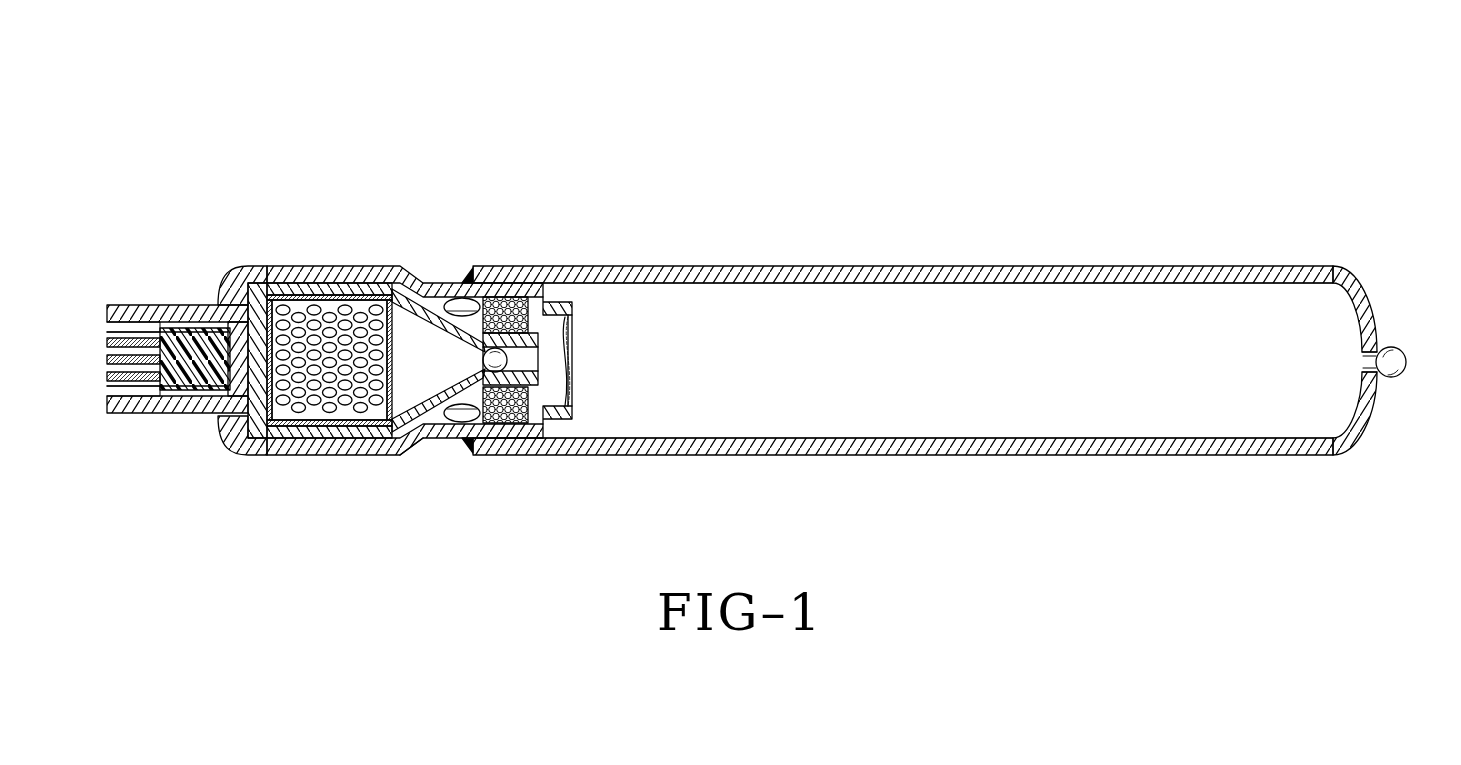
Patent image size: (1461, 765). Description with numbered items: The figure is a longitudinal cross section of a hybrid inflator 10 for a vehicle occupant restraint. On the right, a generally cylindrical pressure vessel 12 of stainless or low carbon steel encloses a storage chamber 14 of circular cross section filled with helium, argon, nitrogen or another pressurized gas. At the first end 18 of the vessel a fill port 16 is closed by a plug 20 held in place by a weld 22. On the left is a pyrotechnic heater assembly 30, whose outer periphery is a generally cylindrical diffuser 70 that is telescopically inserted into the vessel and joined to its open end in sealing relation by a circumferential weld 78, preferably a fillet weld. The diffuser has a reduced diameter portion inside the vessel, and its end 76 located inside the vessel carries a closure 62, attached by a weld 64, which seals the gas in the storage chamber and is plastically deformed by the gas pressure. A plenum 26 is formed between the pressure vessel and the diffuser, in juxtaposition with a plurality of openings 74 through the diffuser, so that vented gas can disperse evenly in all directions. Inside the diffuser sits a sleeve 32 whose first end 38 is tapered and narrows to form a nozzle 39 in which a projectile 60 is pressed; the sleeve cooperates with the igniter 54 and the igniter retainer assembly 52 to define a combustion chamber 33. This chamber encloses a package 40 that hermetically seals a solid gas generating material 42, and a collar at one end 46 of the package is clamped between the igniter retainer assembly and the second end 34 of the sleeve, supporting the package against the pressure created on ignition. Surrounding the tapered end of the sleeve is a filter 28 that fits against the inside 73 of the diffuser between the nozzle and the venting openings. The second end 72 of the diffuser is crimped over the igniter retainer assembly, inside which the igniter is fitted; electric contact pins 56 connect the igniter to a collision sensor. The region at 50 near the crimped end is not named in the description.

The hybrid inflator 10 is at (733, 164).
The pressure vessel 12 is at (848, 278).
The storage chamber 14 is at (953, 300).
The fill port 16 is at (1365, 365).
The first end 18 is at (1356, 296).
The plug 20 is at (1400, 357).
The weld 22 is at (1381, 377).
The plenum 26 is at (440, 445).
The filter 28 is at (535, 420).
The pyrotechnic heater assembly 30 is at (201, 254).
The sleeve 32 is at (318, 283).
The combustion chamber 33 is at (345, 295).
The second end of the sleeve 34 is at (288, 294).
The first end of the sleeve 38 is at (414, 300).
The nozzle 39 is at (546, 304).
The package 40 is at (327, 420).
The solid gas generating material 42 is at (357, 397).
The end of the package 46 is at (277, 428).
The housing end 50 is at (238, 432).
The igniter retainer assembly 52 is at (148, 305).
The igniter 54 is at (185, 393).
The electric contact pins 56 is at (112, 352).
The projectile 60 is at (507, 358).
The closure 62 is at (570, 360).
The weld 64 is at (585, 437).
The diffuser 70 is at (383, 275).
The second end of the diffuser 72 is at (237, 277).
The inside of the diffuser 73 is at (505, 303).
The openings 74 is at (462, 300).
The end of the diffuser 76 is at (562, 302).
The circumferential weld 78 is at (462, 440).